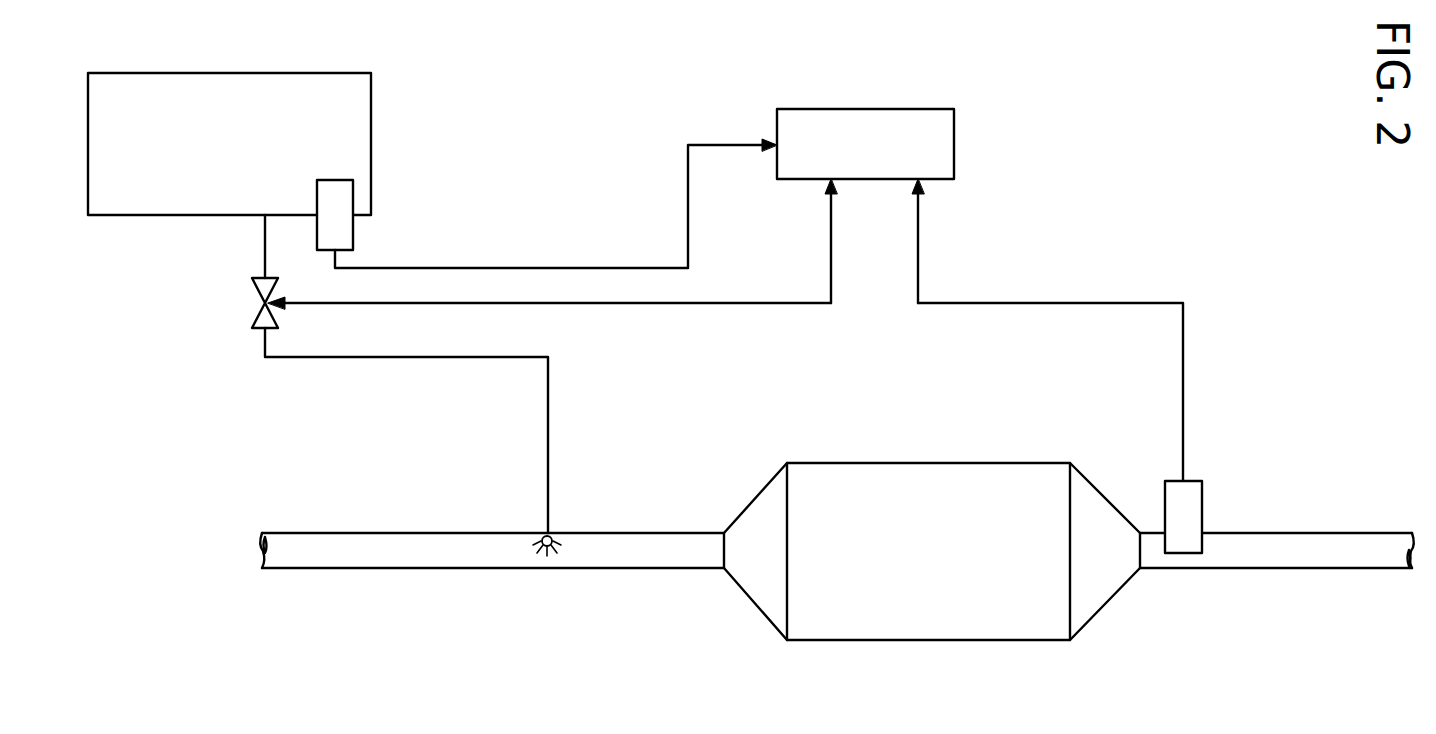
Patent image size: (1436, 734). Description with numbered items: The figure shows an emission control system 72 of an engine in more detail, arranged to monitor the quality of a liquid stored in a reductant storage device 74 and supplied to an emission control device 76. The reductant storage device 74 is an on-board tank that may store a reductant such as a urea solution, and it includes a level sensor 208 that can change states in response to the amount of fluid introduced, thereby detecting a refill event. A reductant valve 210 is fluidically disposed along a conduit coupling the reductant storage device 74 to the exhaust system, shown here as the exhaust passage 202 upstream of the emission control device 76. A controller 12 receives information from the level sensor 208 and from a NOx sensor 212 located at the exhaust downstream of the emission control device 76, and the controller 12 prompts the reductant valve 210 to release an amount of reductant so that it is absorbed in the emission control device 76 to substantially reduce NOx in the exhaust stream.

The emission control system 72 is at (1183, 115).
The reductant storage device 74 is at (228, 73).
The level sensor 208 is at (353, 250).
The controller 12 is at (866, 109).
The reductant valve 210 is at (253, 328).
The exhaust pipe 202 is at (353, 533).
The emission control device 76 is at (928, 640).
The NOx sensor 212 is at (1202, 497).